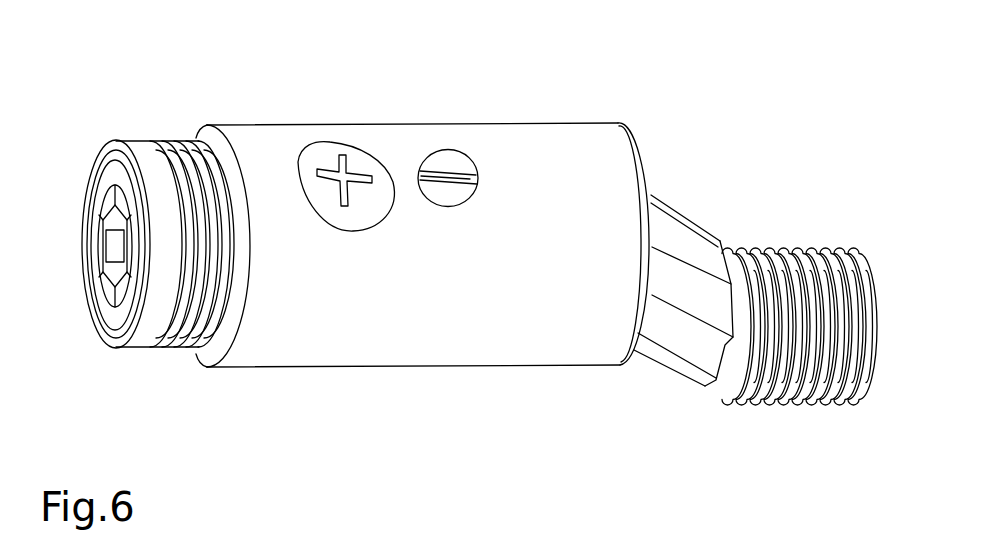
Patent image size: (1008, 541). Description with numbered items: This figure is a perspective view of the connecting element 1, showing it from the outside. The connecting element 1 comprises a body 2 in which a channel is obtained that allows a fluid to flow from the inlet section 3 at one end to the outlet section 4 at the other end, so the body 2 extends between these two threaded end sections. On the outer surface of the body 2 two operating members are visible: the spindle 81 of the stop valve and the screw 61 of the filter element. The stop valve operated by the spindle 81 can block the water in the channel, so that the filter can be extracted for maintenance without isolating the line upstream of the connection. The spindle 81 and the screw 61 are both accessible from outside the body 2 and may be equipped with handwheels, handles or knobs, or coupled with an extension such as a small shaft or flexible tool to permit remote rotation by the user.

The connecting element 1 is at (530, 97).
The body 2 is at (503, 335).
The inlet section 3 is at (855, 363).
The outlet section 4 is at (112, 140).
The screw 61 is at (323, 155).
The spindle 81 is at (448, 162).